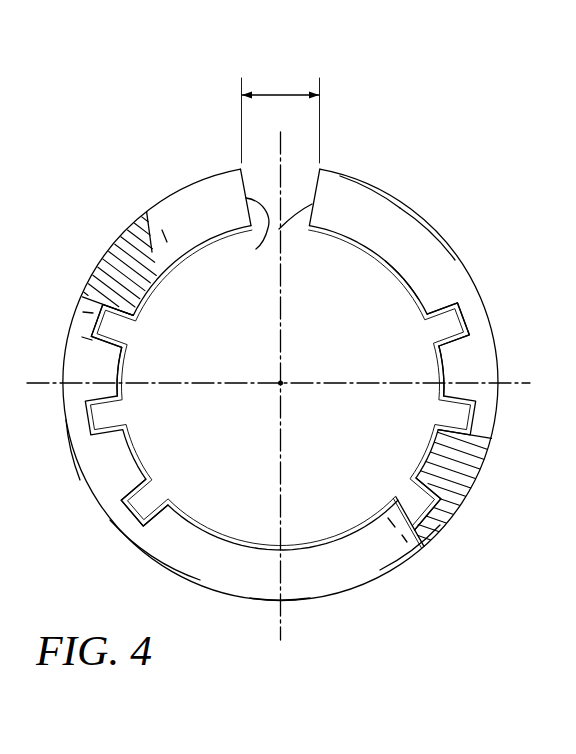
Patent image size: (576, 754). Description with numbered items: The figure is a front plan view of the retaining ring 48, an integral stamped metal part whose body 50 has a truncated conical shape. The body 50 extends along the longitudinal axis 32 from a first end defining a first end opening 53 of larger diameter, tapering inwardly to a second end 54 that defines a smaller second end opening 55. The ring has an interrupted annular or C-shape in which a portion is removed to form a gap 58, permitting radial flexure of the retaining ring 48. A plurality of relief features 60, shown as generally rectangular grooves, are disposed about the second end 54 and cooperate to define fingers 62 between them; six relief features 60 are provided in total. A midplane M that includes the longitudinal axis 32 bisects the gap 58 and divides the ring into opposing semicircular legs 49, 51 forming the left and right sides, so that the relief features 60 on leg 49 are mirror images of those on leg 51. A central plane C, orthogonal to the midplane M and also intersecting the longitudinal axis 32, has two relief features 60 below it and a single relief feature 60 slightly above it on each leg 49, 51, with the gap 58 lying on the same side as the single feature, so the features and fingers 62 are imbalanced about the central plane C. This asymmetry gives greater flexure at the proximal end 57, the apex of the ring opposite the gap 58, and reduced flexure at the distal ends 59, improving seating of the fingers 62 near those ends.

The retaining ring 48 is at (135, 205).
The semicircular leg 49 is at (156, 538).
The body 50 is at (358, 208).
The semicircular leg 51 is at (383, 553).
The first end opening 53 is at (0, 457).
The second end 54 is at (410, 275).
The second end opening 55 is at (362, 272).
The proximal end 57 is at (280, 602).
The gap 58 is at (281, 93).
The distal ends 59 is at (279, 229).
The relief features 60 is at (120, 332).
The fingers 62 is at (122, 364).
The longitudinal axis 32 is at (283, 381).
The central plane C is at (45, 383).
The midplane M is at (283, 607).